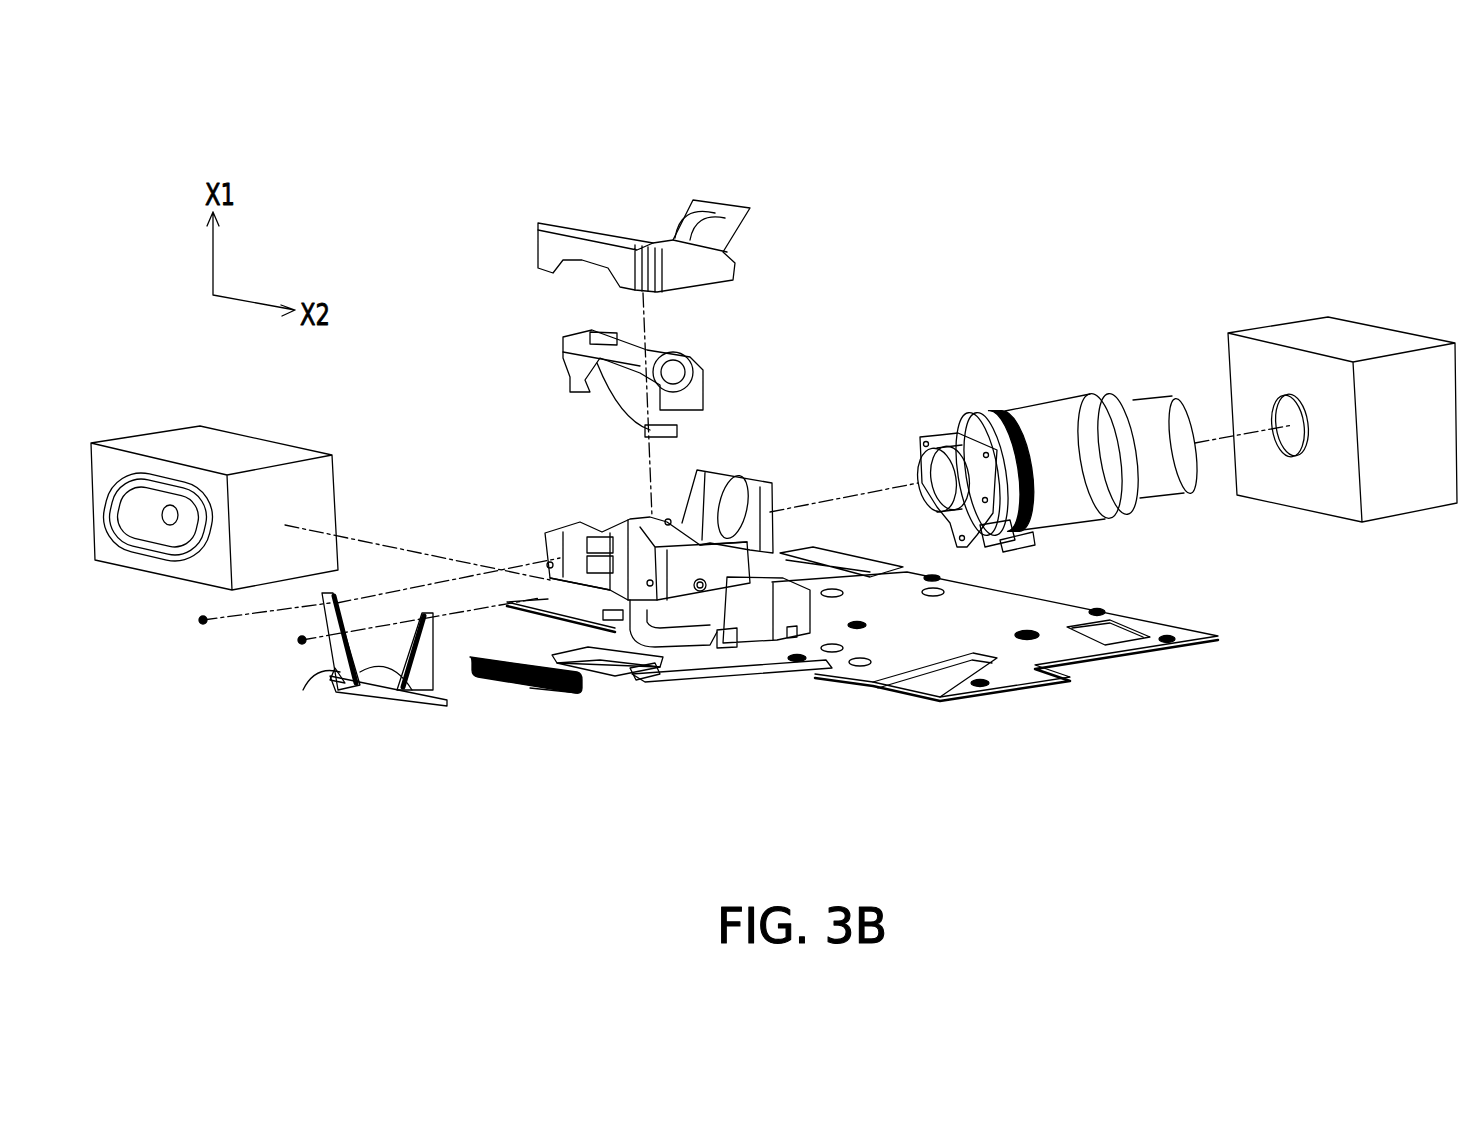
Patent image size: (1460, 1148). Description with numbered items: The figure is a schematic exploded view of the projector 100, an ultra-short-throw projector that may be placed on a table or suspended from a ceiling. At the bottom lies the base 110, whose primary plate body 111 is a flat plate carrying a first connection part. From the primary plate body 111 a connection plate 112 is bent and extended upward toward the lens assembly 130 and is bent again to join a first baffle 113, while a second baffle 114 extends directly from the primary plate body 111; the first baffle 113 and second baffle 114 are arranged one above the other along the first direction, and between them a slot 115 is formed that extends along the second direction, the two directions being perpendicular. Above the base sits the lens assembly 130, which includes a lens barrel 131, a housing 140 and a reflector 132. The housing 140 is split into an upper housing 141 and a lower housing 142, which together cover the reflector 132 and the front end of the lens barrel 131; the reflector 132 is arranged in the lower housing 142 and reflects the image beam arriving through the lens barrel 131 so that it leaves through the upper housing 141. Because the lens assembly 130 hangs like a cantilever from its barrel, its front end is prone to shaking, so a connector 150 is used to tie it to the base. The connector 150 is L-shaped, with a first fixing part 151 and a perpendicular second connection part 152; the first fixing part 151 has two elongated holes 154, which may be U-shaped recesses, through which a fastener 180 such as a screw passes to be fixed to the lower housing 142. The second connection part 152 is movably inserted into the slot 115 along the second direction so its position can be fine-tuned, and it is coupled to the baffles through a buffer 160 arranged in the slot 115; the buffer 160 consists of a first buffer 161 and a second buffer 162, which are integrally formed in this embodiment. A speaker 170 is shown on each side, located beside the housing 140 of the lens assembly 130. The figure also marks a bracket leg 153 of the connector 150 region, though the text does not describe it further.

The projector 100 is at (866, 688).
The base 110 is at (830, 688).
The primary plate body 111 is at (780, 672).
The connection plate 112 is at (657, 658).
The first baffle 113 is at (603, 647).
The second baffle 114 is at (585, 663).
The slot 115 is at (645, 674).
The lens assembly 130 is at (913, 367).
The lens barrel 131 is at (1043, 428).
The reflector 132 is at (633, 388).
The housing 140 is at (699, 424).
The upper housing 141 is at (707, 270).
The lower housing 142 is at (570, 550).
The connector 150 is at (332, 624).
The first fixing part 151 is at (380, 688).
The second connection part 152 is at (440, 703).
The bracket leg 153 is at (338, 664).
The elongated hole 154 is at (423, 612).
The buffer 160 is at (577, 758).
The first buffer 161 is at (530, 690).
The second buffer 162 is at (572, 691).
The speaker 170 is at (180, 442).
The fastener 180 is at (300, 641).